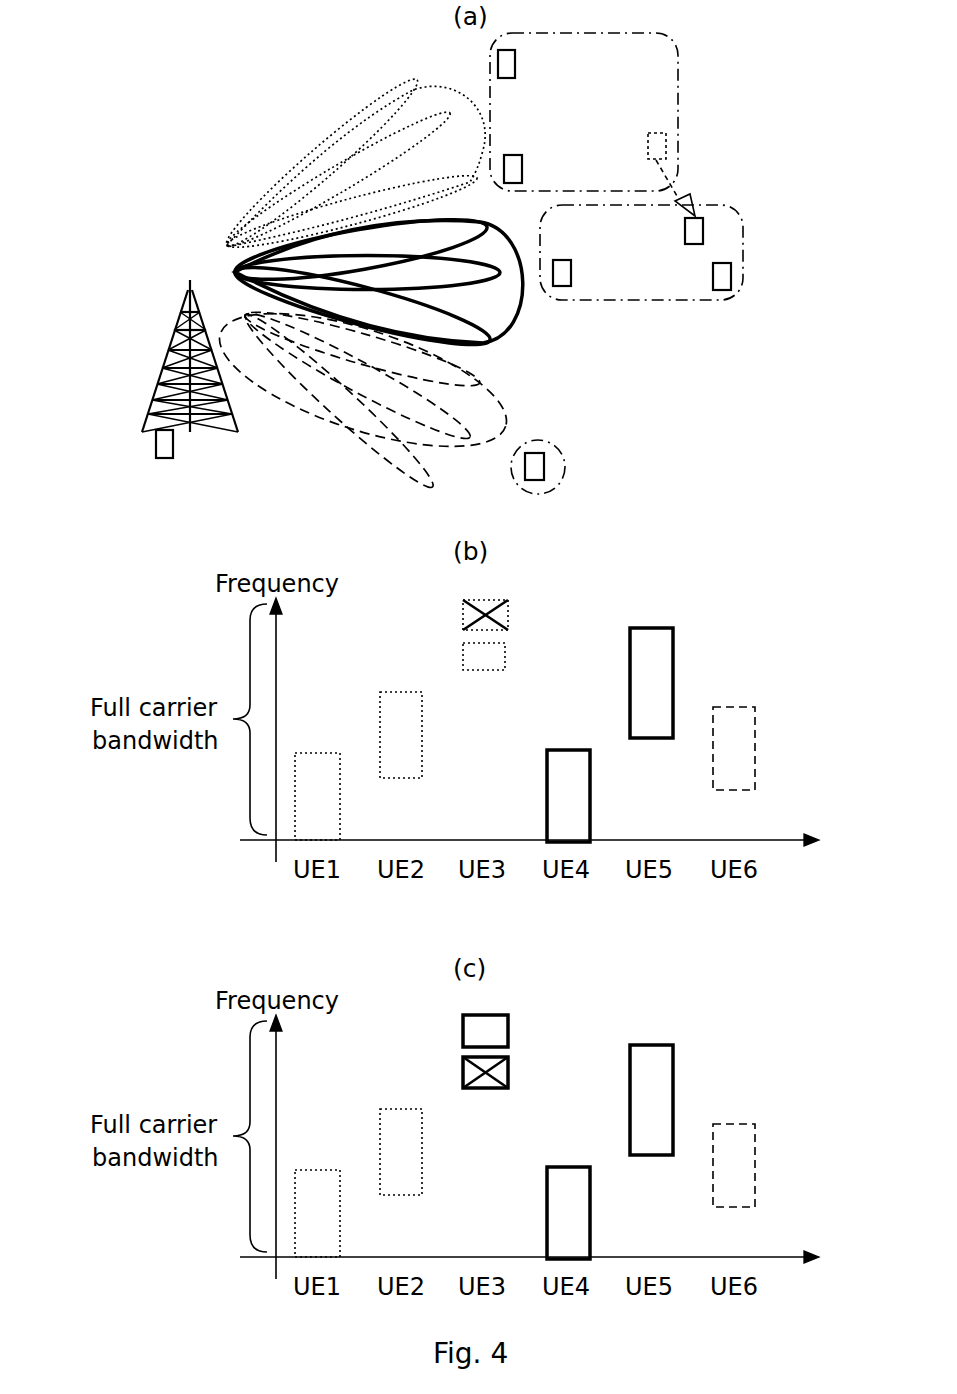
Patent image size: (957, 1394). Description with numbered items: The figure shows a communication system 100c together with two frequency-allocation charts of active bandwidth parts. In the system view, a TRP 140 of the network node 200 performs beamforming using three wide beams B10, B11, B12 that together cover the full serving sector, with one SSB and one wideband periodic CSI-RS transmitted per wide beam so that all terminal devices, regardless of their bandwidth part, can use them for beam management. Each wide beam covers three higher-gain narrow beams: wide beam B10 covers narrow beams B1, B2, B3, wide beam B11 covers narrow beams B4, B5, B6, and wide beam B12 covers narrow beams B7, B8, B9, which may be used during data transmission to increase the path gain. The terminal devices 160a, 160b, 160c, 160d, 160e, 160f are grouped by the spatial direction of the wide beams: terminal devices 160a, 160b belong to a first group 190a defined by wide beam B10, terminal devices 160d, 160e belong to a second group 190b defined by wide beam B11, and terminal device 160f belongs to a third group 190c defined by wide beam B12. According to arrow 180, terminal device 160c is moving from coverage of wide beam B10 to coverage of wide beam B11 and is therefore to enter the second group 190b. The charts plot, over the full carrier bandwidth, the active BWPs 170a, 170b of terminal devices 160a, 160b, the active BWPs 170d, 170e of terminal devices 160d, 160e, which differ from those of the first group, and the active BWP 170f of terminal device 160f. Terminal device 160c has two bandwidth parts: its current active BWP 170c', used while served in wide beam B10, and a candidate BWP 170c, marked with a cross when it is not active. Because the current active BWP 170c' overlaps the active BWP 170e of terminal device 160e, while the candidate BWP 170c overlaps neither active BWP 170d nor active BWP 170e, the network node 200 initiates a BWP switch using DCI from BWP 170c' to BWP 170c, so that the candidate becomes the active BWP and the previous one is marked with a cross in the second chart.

The communication system 100c is at (235, 97).
The TRP 140 is at (186, 296).
The network node 200 is at (176, 447).
The narrow beam B1 is at (322, 163).
The narrow beam B2 is at (338, 179).
The narrow beam B3 is at (352, 211).
The narrow beam B4 is at (360, 249).
The narrow beam B5 is at (367, 274).
The narrow beam B6 is at (362, 306).
The narrow beam B7 is at (362, 349).
The narrow beam B8 is at (357, 376).
The narrow beam B9 is at (339, 401).
The wide beam B10 is at (356, 166).
The wide beam B11 is at (379, 282).
The wide beam B12 is at (363, 380).
The terminal device 160a is at (517, 65).
The terminal device 160b is at (525, 170).
The terminal device 160c is at (705, 232).
The terminal device 160d is at (733, 277).
The terminal device 160e is at (573, 272).
The terminal device 160f is at (545, 467).
The arrow 180 is at (678, 188).
The first group 190a is at (678, 72).
The second group 190b is at (670, 300).
The third group 190c is at (563, 445).
The active BWP 170a is at (325, 780).
The active BWP 170b is at (402, 727).
The candidate BWP 170c is at (524, 796).
The current active BWP 170c' is at (540, 852).
The active BWP 170d is at (570, 775).
The active BWP 170e is at (650, 643).
The active BWP 170f is at (742, 727).